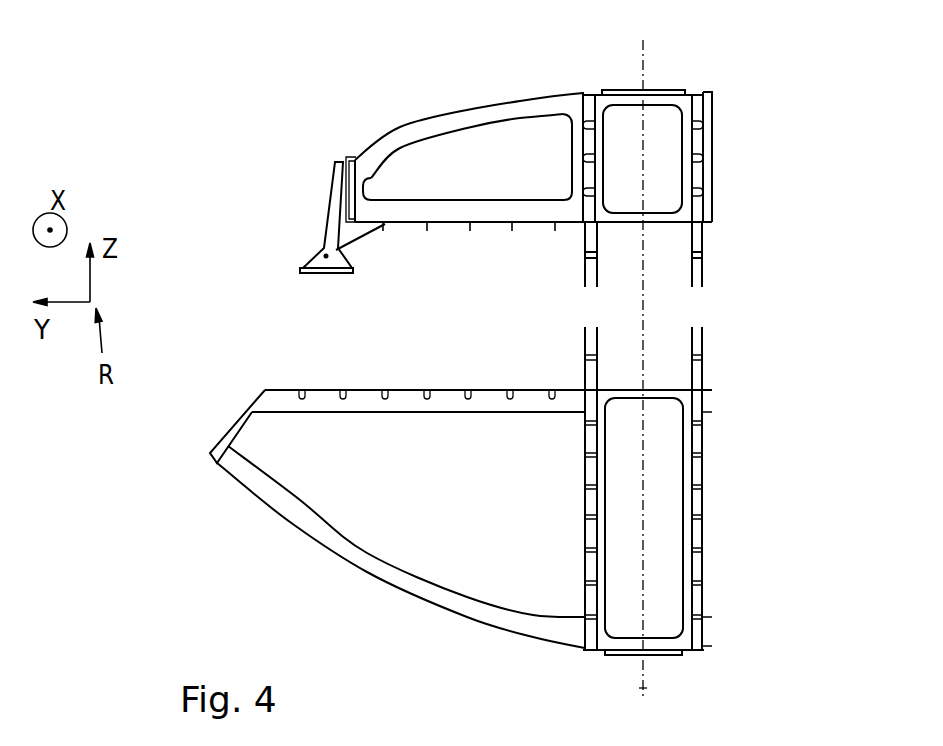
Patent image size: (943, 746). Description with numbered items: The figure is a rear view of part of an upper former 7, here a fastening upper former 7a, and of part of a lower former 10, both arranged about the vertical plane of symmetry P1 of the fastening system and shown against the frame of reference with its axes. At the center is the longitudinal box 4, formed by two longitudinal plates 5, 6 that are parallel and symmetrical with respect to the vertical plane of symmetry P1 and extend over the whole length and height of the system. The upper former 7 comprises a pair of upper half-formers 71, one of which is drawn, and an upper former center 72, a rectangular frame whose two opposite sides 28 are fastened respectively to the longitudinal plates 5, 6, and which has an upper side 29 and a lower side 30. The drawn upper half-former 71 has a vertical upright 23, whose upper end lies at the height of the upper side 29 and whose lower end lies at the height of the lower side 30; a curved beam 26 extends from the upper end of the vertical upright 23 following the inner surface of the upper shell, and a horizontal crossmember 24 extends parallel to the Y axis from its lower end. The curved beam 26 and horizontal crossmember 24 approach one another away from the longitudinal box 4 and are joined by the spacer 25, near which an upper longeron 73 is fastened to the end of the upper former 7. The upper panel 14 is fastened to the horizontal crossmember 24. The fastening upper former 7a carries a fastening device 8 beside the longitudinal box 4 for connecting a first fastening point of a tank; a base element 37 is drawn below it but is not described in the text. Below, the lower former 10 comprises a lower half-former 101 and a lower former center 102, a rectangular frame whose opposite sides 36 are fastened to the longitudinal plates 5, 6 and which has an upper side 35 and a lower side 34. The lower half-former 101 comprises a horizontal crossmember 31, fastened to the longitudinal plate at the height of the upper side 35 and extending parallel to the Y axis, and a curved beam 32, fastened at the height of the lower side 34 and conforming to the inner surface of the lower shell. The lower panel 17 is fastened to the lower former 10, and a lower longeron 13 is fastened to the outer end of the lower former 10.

The longitudinal box 4 is at (651, 68).
The longitudinal plate 5 is at (585, 263).
The longitudinal plate 6 is at (702, 238).
The upper former 7 is at (509, 151).
The fastening upper former 7a is at (297, 185).
The fastening device 8 is at (323, 233).
The lower former 10 is at (364, 501).
The lower longeron 13 is at (240, 420).
The upper panel 14 is at (420, 196).
The lower panel 17 is at (418, 388).
The vertical upright 23 is at (570, 162).
The horizontal crossmember 24 is at (470, 210).
The spacer 25 is at (363, 193).
The curved beam 26 is at (420, 128).
The opposite side 28 is at (616, 150).
The upper side 29 is at (665, 100).
The lower side 30 is at (650, 222).
The horizontal crossmember 31 is at (502, 388).
The curved beam 32 is at (447, 615).
The lower side 34 is at (663, 655).
The upper side 35 is at (655, 388).
The opposite side 36 is at (597, 510).
The base plate 37 is at (305, 263).
The upper half-former 71 is at (528, 85).
The upper former center 72 is at (668, 97).
The upper longeron 73 is at (340, 160).
The lower half-former 101 is at (283, 520).
The lower former center 102 is at (603, 652).
The vertical plane of symmetry P1 is at (647, 688).